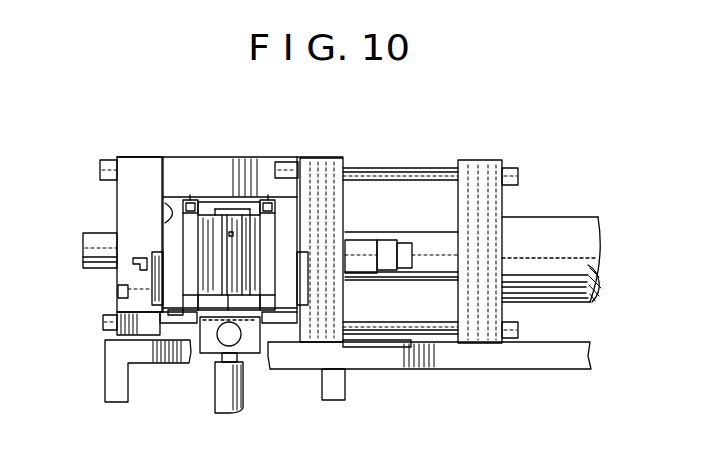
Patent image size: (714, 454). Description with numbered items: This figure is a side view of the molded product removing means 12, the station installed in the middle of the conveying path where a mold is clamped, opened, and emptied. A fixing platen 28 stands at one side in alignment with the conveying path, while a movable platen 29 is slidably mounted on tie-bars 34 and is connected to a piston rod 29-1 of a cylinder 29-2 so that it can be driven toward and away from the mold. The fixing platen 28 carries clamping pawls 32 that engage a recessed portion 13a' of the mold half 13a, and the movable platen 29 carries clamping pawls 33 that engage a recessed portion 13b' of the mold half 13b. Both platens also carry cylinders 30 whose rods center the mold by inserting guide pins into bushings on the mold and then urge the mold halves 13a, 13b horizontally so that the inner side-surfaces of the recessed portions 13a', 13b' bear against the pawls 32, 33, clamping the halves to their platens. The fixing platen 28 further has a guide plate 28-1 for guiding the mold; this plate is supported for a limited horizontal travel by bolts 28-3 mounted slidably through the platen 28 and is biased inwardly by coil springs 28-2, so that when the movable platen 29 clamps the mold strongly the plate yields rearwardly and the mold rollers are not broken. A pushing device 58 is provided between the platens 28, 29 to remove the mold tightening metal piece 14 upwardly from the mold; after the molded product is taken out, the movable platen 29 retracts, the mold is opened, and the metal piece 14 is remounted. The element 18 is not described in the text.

The molded product removing means 12 is at (358, 153).
The mold half 13a is at (159, 264).
The recessed portion 13a' is at (158, 215).
The mold half 13b is at (284, 308).
The recessed portion 13b' is at (297, 215).
The mold tightening metal piece 14 is at (208, 215).
The side plate 18 is at (167, 272).
The fixing platen 28 is at (137, 157).
The guide plate 28-1 is at (113, 338).
The coil springs 28-2 is at (117, 287).
The bolts 28-3 is at (133, 268).
The movable platen 29 is at (319, 158).
The piston rod 29-1 is at (408, 232).
The cylinder 29-2 is at (545, 217).
The cylinders 30 is at (96, 232).
The clamping pawls 32 is at (190, 200).
The clamping pawls 33 is at (268, 200).
The tie-bars 34 is at (418, 170).
The pushing devices 58 is at (210, 350).